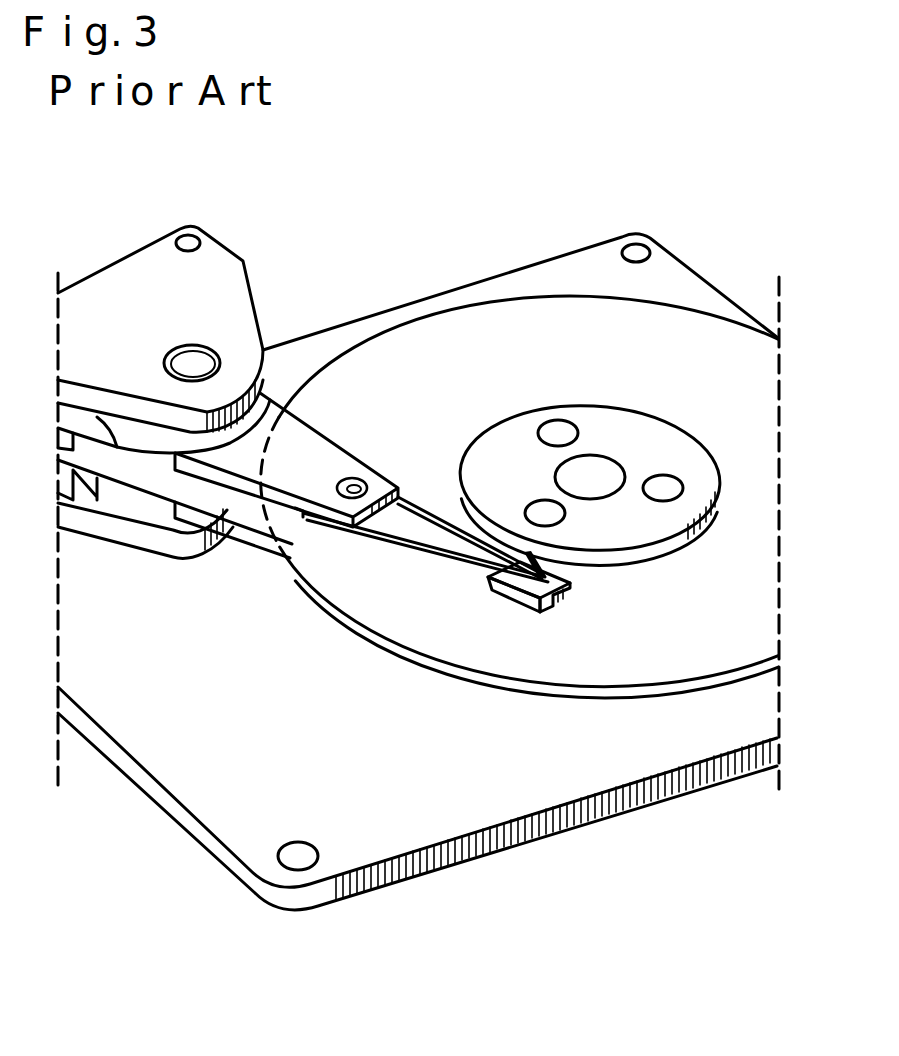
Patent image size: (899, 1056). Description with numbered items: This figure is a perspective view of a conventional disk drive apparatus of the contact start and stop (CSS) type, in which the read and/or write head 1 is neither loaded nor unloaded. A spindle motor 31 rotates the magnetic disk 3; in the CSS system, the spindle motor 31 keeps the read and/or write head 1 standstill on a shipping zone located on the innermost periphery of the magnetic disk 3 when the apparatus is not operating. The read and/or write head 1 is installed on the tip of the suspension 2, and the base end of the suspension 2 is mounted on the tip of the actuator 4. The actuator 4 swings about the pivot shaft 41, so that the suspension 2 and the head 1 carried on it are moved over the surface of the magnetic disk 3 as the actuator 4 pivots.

The read and/or write head 1 is at (568, 584).
The suspension 2 is at (443, 512).
The magnetic disk 3 is at (548, 690).
The spindle motor 31 is at (613, 455).
The actuator 4 is at (268, 400).
The pivot shaft 41 is at (200, 357).